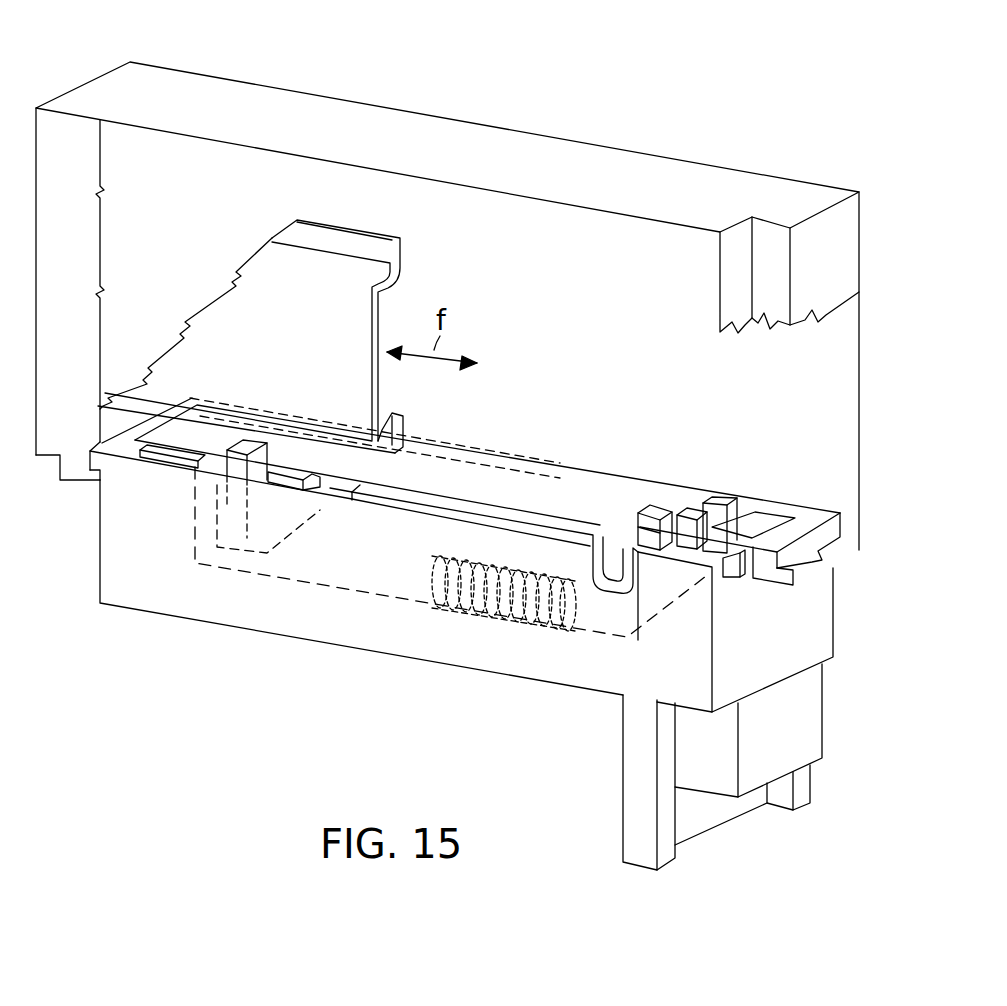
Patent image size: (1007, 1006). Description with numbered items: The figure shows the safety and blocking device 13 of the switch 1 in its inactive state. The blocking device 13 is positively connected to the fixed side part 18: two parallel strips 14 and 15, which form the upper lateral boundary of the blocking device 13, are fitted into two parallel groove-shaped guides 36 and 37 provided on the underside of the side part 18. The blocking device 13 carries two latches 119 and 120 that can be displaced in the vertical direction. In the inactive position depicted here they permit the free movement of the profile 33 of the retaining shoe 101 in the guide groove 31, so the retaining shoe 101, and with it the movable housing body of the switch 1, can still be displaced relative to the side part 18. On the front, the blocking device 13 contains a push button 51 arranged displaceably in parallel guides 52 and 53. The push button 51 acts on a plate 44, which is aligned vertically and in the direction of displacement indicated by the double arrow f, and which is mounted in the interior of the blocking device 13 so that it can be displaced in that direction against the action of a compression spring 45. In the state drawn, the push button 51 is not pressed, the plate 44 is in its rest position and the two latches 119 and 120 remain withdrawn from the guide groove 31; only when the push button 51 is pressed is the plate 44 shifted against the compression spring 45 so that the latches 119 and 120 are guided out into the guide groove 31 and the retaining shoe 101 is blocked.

The switch 1 is at (193, 62).
The side part 18 is at (466, 147).
The retaining shoe 101 is at (235, 298).
The strip 14 is at (88, 451).
The guide 36 is at (86, 478).
The blocking device 13 is at (126, 605).
The profile 33 is at (404, 432).
The guide groove 31 is at (532, 475).
The latch 119 is at (245, 445).
The plate 44 is at (365, 580).
The compression spring 45 is at (473, 618).
The latch 120 is at (725, 503).
The strip 15 is at (816, 535).
The guide 37 is at (770, 582).
The push button 51 is at (805, 720).
The guide 52 is at (637, 823).
The guide 53 is at (806, 794).